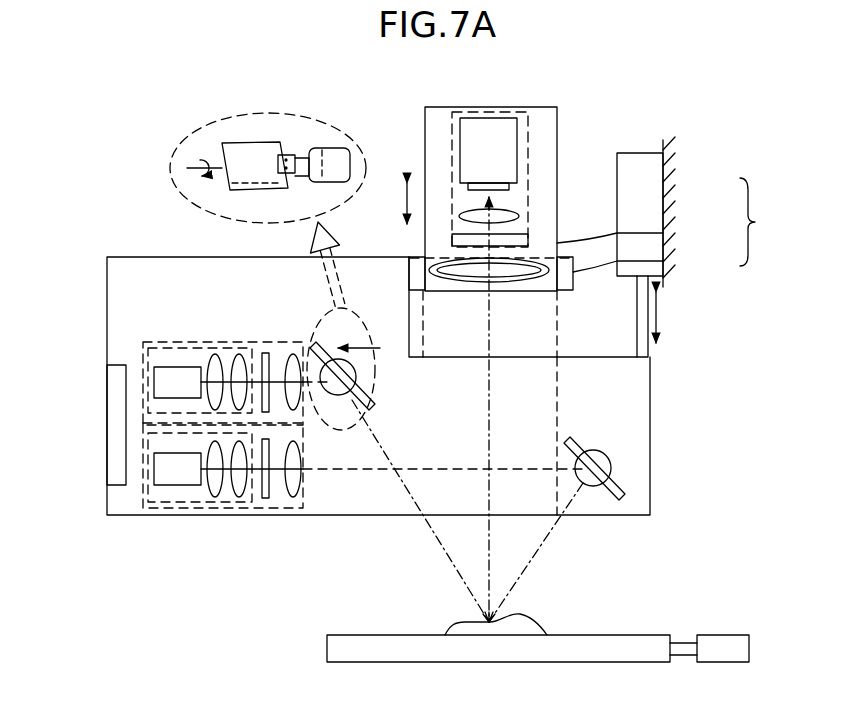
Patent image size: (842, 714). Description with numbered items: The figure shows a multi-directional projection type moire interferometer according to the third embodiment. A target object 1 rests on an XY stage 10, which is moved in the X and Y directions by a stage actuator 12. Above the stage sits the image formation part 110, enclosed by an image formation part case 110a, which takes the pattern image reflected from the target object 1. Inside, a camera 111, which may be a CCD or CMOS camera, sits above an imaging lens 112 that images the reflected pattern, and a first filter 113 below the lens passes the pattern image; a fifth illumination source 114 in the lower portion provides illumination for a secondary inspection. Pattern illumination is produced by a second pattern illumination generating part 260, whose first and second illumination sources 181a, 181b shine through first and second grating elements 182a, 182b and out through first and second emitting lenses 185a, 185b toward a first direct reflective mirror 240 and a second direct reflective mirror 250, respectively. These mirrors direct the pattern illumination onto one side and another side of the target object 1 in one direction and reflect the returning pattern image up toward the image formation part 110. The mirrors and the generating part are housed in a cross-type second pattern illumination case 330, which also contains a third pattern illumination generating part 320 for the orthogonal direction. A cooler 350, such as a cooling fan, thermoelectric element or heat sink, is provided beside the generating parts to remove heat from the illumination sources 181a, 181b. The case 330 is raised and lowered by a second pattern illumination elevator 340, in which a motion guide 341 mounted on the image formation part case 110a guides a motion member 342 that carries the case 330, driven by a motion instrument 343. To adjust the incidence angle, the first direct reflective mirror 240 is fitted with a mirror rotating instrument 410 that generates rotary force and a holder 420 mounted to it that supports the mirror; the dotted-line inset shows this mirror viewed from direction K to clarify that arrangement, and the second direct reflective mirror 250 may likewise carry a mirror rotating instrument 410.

The target object 1 is at (460, 628).
The XY stage 10 is at (368, 640).
The stage actuator 12 is at (727, 640).
The image formation part 110 is at (512, 108).
The image formation part case 110a is at (428, 108).
The camera 111 is at (480, 125).
The imaging lens 112 is at (515, 216).
The first filter 113 is at (517, 238).
The fifth illumination source 114 is at (540, 268).
The first illumination source 181a is at (165, 340).
The second illumination source 181b is at (178, 504).
The first grating element 182a is at (262, 357).
The second grating element 182b is at (262, 496).
The first emitting lens 185a is at (293, 358).
The second emitting lens 185b is at (293, 496).
The first direct reflective mirror 240 is at (243, 143).
The second direct reflective mirror 250 is at (620, 486).
The second pattern illumination generating part 260 is at (143, 350).
The third pattern illumination generating part 320 is at (560, 332).
The second pattern illumination case 330 is at (650, 378).
The second pattern illumination elevator 340 is at (763, 222).
The motion guide 341 is at (663, 233).
The motion member 342 is at (663, 261).
The motion instrument 343 is at (655, 193).
The cooler 350 is at (107, 410).
The mirror rotating instrument 410 is at (330, 150).
The holder 420 is at (290, 153).